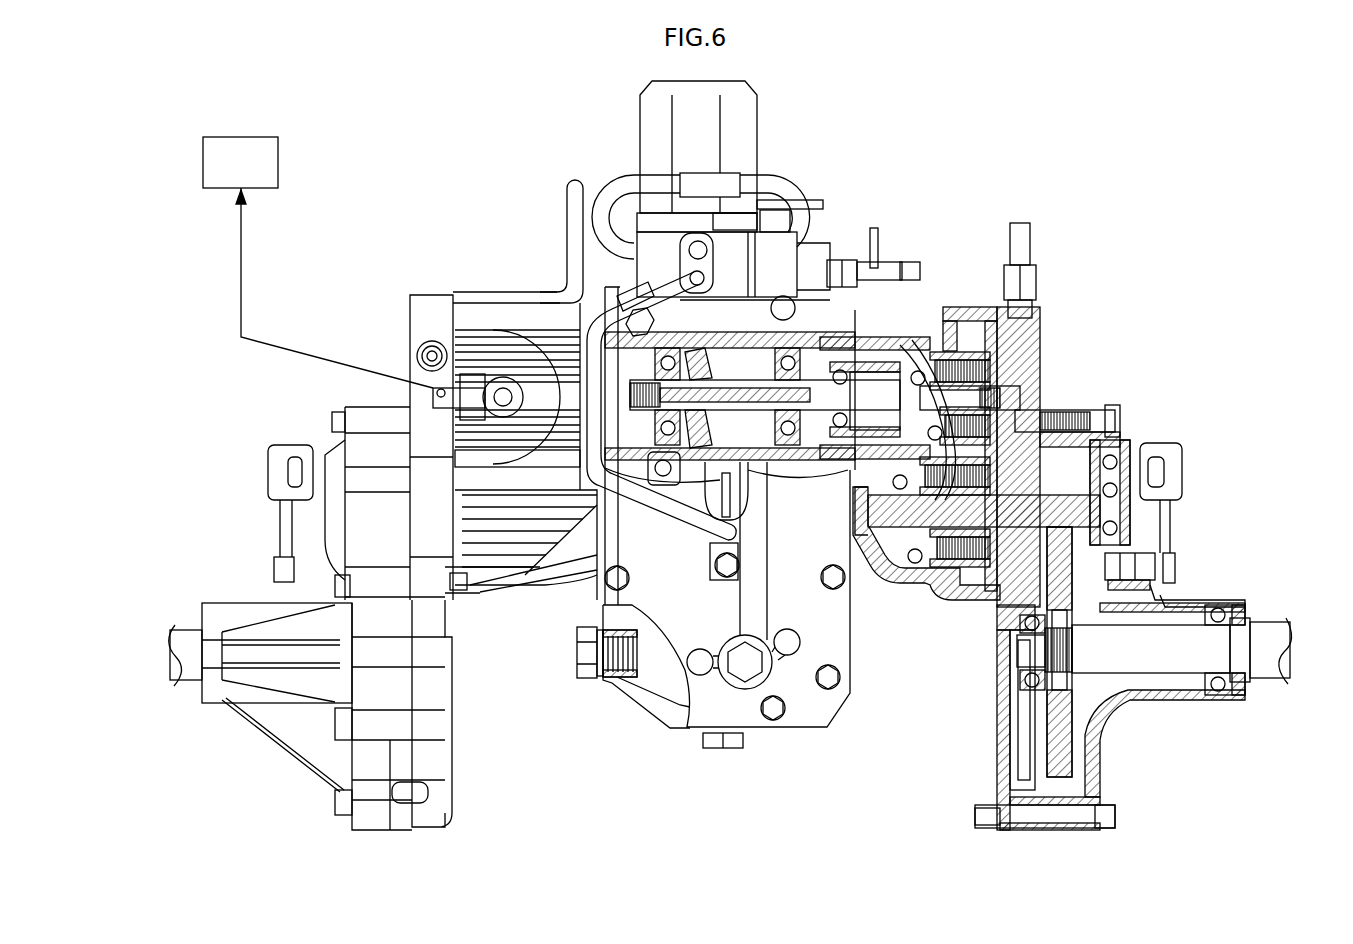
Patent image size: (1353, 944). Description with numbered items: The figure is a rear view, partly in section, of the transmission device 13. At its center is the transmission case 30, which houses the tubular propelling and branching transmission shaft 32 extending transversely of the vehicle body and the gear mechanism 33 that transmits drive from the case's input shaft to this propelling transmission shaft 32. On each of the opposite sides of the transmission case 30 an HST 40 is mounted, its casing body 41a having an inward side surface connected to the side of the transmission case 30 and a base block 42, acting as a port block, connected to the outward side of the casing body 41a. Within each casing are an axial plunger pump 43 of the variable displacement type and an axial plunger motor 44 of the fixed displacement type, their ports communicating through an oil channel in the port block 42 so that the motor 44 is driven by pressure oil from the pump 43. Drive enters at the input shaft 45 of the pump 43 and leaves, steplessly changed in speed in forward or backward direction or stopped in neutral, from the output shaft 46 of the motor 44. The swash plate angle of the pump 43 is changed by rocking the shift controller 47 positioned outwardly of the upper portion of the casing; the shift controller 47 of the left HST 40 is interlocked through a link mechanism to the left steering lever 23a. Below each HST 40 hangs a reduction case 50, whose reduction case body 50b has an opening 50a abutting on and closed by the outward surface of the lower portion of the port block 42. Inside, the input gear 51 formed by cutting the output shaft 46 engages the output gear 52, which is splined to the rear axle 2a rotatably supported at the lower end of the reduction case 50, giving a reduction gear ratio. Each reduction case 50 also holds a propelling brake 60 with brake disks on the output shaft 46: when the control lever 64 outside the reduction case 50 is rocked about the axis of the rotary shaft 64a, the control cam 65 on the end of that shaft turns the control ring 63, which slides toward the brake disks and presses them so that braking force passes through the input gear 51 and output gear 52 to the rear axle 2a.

The rear axle 2a is at (190, 690).
The transmission device 13 is at (855, 187).
The left steering lever 23a is at (318, 262).
The transmission case 30 is at (763, 737).
The propelling and branching transmission shaft 32 is at (740, 380).
The gear mechanism 33 is at (692, 375).
The HST 40 is at (485, 302).
The casing body 41a is at (462, 300).
The base block 42 is at (408, 332).
The axial plunger pump 43 is at (940, 358).
The axial plunger motor 44 is at (962, 572).
The input shaft 45 is at (652, 470).
The output shaft 46 is at (1068, 428).
The shift controller 47 is at (430, 395).
The reduction case 50 is at (262, 734).
The opening 50a is at (415, 740).
The reduction case body 50b is at (318, 738).
The input gear 51 is at (1085, 445).
The output gear 52 is at (1050, 775).
The propelling brake 60 is at (1087, 586).
The control ring 63 is at (1118, 450).
The control lever 64 is at (265, 472).
The rotary shaft 64a is at (270, 572).
The control cam 65 is at (1105, 562).